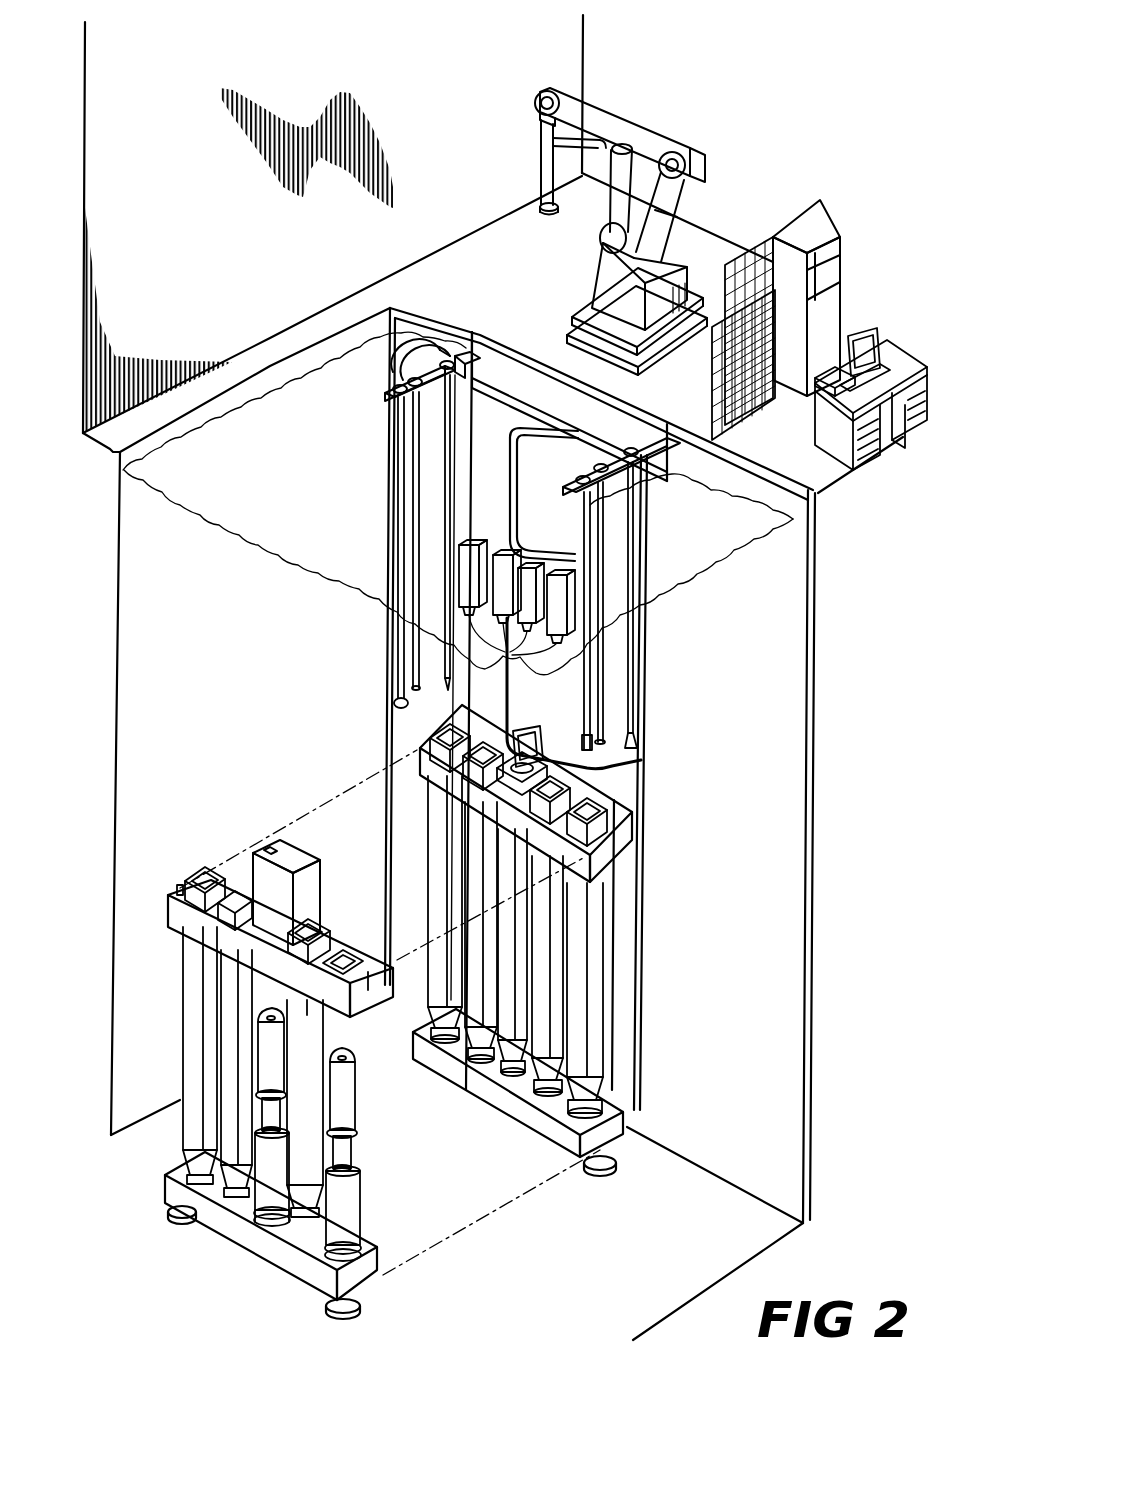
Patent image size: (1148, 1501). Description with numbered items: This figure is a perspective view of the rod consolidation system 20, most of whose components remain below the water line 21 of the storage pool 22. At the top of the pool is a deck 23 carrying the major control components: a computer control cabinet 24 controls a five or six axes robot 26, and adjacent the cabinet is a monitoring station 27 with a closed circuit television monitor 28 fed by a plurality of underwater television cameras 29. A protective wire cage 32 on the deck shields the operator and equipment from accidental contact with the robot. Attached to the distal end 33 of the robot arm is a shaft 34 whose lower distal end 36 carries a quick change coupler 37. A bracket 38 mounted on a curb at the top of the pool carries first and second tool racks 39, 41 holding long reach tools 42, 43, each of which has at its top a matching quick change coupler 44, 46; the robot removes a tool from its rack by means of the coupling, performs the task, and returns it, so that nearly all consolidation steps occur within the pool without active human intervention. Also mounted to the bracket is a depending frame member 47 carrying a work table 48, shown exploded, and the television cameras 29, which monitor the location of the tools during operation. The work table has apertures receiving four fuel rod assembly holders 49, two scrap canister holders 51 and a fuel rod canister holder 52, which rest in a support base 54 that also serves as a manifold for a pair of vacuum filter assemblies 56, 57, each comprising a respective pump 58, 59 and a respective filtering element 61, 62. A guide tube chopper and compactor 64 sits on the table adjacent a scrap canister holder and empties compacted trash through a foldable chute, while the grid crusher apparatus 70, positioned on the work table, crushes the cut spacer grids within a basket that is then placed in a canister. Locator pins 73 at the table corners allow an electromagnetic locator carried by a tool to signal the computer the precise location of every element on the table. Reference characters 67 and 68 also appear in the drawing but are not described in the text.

The rod consolidation system 20 is at (786, 83).
The water line 21 is at (712, 575).
The storage pool 22 is at (773, 798).
The deck 23 is at (817, 470).
The computer control cabinet 24 is at (797, 208).
The robot 26 is at (652, 130).
The monitoring station 27 is at (902, 352).
The closed circuit television monitor 28 is at (856, 318).
The underwater television cameras 29 is at (500, 652).
The protective wire cage 32 is at (763, 248).
The distal end of robot arm 33 is at (548, 92).
The shaft 34 is at (546, 140).
The distal end of shaft 36 is at (536, 180).
The quick change coupler 37 is at (538, 208).
The bracket 38 is at (670, 425).
The first tool rack 39 is at (385, 396).
The second tool rack 41 is at (650, 490).
The long reach tool 42 is at (435, 441).
The long reach tool 43 is at (600, 542).
The quick change coupler 44 is at (395, 369).
The quick change coupler 46 is at (618, 478).
The depending frame member 47 is at (410, 902).
The work table 48 is at (605, 843).
The fuel rod assembly holders 49 is at (470, 844).
The scrap canister holders 51 is at (227, 1054).
The fuel rod canister holder 52 is at (192, 978).
The support base 54 is at (373, 1287).
The vacuum filter assembly 56 is at (311, 1157).
The vacuum filter assembly 57 is at (236, 1096).
The pump 58 is at (347, 1221).
The pump 59 is at (258, 1183).
The filtering element 61 is at (355, 1111).
The filtering element 62 is at (300, 1044).
The guide tube chopper and compactor 64 is at (279, 1055).
The probe rod 67 is at (398, 526).
The probe rod 68 is at (433, 474).
The grid crusher apparatus 70 is at (548, 752).
The locator pins 73 is at (177, 892).